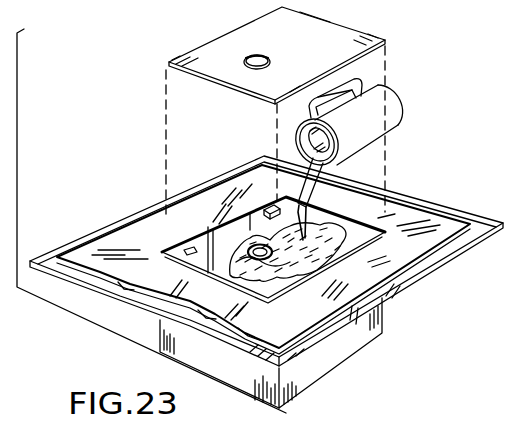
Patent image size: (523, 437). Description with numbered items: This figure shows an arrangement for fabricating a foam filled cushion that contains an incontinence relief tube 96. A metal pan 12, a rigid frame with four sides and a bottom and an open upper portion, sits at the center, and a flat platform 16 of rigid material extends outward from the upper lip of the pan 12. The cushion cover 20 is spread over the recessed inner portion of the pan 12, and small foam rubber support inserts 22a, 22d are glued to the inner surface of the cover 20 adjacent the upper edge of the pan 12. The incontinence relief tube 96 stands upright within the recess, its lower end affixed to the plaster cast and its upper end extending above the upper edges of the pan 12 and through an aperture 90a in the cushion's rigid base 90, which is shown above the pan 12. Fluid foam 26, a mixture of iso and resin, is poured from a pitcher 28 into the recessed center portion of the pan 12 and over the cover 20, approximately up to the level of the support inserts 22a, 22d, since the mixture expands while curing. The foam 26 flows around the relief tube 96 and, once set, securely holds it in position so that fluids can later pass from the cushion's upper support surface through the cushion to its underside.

The metal pan 12 is at (347, 340).
The flat platform 16 is at (420, 208).
The cover 20 is at (422, 247).
The support insert 22a is at (266, 209).
The support insert 22d is at (189, 248).
The foam 26 is at (340, 252).
The pitcher 28 is at (383, 102).
The base 90 is at (303, 51).
The aperture 90a is at (247, 57).
The incontinence relief tube 96 is at (243, 245).